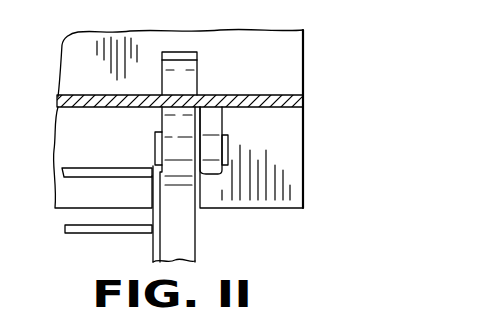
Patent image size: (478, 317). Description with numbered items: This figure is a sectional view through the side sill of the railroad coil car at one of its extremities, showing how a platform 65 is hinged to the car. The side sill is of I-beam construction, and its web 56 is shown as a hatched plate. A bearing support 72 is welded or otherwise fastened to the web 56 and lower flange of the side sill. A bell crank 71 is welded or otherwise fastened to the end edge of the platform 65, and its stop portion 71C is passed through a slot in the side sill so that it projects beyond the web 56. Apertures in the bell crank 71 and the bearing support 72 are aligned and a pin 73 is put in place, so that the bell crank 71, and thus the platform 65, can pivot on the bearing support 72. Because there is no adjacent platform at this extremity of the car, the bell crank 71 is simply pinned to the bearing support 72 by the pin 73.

The web 56 is at (268, 98).
The bell crank 71 is at (187, 235).
The stop portion 71C is at (170, 70).
The bearing support 72 is at (213, 125).
The pin 73 is at (152, 150).
The platform 65 is at (77, 232).